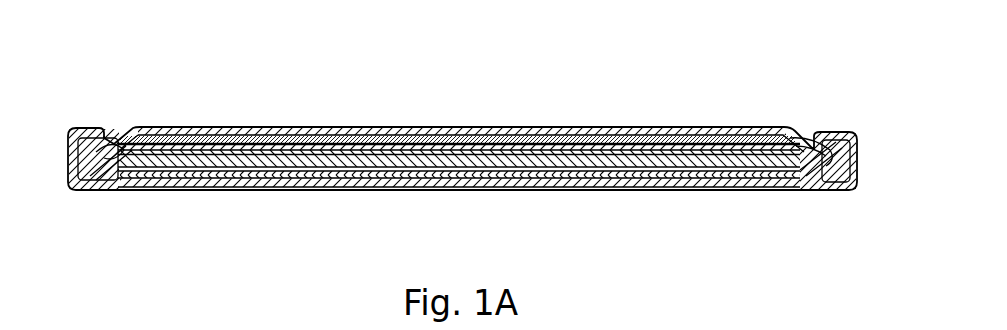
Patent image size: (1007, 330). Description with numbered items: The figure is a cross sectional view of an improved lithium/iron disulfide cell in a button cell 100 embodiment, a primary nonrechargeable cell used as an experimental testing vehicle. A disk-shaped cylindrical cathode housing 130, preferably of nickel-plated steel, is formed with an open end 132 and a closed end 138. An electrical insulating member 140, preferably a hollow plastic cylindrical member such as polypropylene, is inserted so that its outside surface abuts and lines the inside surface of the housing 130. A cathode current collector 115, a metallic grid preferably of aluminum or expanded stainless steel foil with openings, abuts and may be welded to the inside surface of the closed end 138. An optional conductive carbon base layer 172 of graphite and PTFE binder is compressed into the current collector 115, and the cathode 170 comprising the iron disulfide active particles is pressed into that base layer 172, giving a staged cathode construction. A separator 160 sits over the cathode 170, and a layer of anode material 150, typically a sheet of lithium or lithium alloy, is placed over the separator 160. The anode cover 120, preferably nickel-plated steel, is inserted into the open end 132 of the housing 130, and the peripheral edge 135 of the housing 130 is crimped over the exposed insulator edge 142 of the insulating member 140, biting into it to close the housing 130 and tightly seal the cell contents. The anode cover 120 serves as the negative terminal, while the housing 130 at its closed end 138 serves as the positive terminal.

The button cell 100 is at (607, 75).
The cathode current collector 115 is at (647, 175).
The anode cover 120 is at (235, 127).
The cathode housing 130 is at (860, 163).
The open end 132 is at (807, 135).
The peripheral edge 135 is at (77, 128).
The closed end 138 is at (442, 190).
The electrical insulating member 140 is at (101, 176).
The insulator edge 142 is at (117, 130).
The anode 150 is at (462, 148).
The separator 160 is at (357, 143).
The cathode 170 is at (562, 177).
The conductive carbon base layer 172 is at (290, 172).